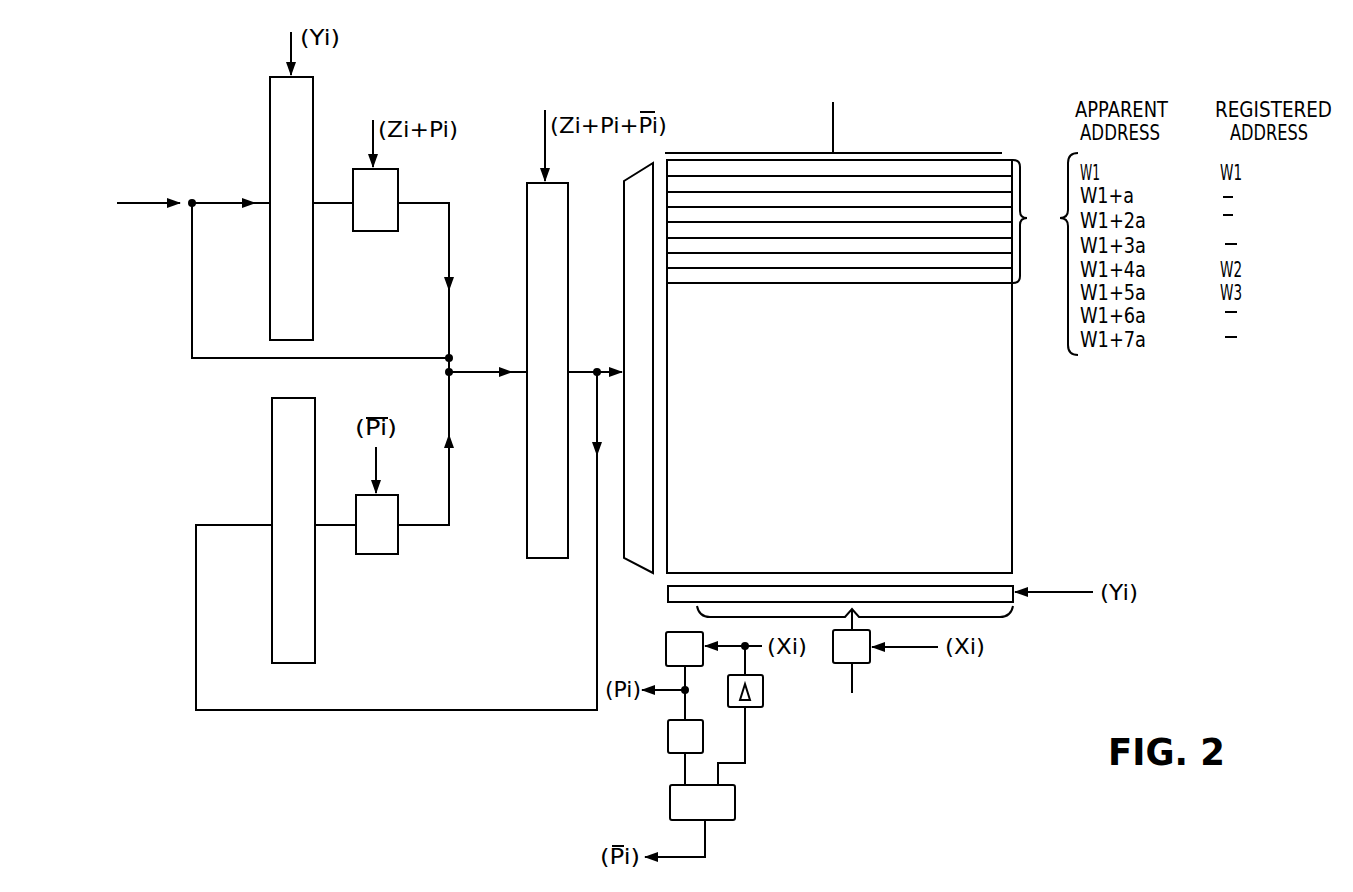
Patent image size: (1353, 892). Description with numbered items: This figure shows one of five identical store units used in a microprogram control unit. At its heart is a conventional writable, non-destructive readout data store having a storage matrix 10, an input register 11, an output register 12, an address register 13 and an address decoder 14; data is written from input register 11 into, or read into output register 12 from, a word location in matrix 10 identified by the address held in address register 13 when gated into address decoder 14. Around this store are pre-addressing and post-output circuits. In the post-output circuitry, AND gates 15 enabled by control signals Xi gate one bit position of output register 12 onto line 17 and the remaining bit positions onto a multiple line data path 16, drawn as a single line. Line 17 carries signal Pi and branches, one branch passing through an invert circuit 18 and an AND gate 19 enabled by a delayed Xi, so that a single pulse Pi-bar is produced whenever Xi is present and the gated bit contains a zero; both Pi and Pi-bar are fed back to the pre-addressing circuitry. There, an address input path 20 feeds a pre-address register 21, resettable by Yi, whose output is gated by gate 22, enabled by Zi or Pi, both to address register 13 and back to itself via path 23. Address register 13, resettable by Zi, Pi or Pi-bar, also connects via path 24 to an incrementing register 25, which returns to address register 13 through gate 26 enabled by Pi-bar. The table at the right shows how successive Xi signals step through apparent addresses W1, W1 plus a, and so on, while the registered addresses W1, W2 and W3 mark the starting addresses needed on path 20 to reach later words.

The storage matrix 10 is at (1012, 470).
The input register 11 is at (928, 152).
The output register 12 is at (1013, 584).
The address register 13 is at (555, 558).
The address decoder 14 is at (648, 575).
The AND gates 15 is at (666, 632).
The multiple line data path 16 is at (852, 680).
The line 17 is at (685, 680).
The invert circuit 18 is at (668, 730).
The AND gate 19 is at (738, 808).
The address input path 20 is at (128, 203).
The pre-address register 21 is at (270, 125).
The gate 22 is at (380, 231).
The path 23 is at (192, 315).
The path 24 is at (458, 707).
The incrementing register 25 is at (272, 636).
The gate 26 is at (378, 554).